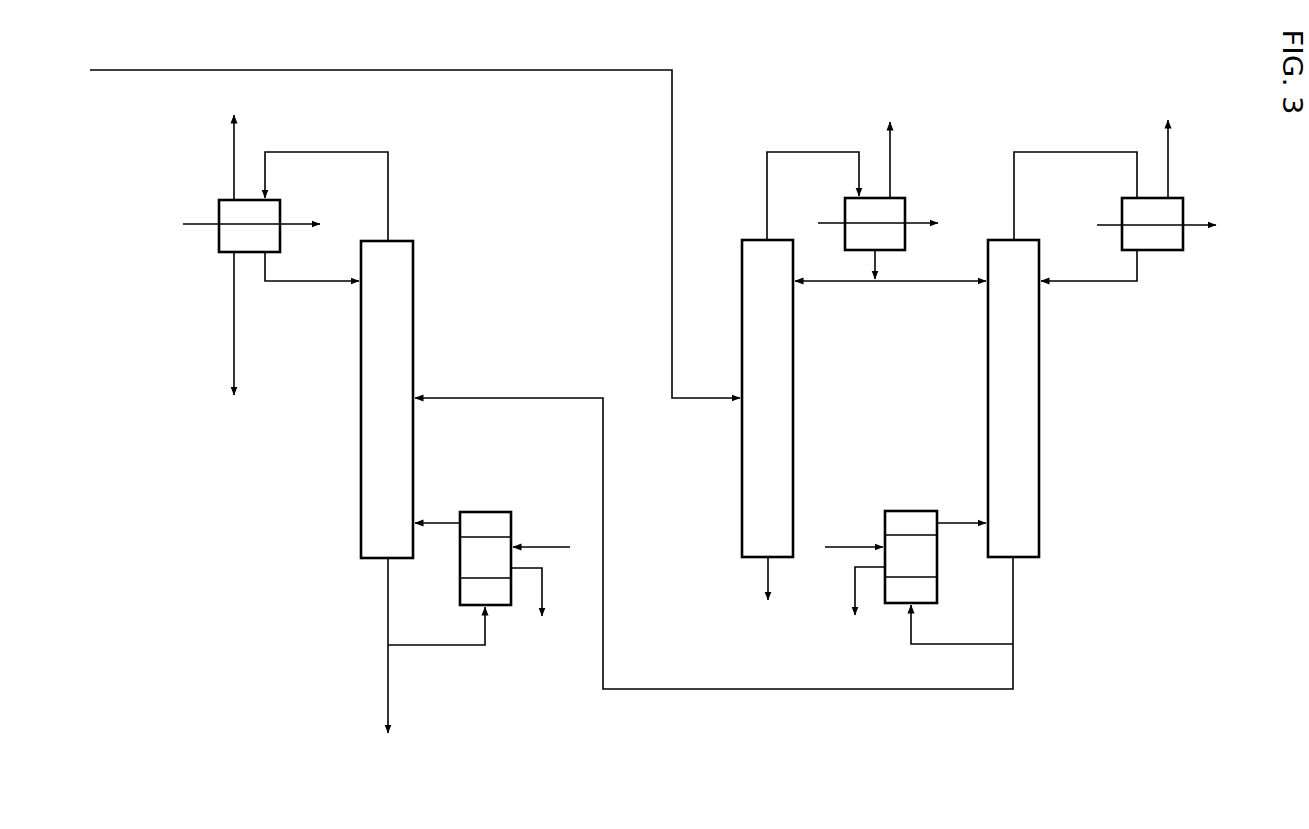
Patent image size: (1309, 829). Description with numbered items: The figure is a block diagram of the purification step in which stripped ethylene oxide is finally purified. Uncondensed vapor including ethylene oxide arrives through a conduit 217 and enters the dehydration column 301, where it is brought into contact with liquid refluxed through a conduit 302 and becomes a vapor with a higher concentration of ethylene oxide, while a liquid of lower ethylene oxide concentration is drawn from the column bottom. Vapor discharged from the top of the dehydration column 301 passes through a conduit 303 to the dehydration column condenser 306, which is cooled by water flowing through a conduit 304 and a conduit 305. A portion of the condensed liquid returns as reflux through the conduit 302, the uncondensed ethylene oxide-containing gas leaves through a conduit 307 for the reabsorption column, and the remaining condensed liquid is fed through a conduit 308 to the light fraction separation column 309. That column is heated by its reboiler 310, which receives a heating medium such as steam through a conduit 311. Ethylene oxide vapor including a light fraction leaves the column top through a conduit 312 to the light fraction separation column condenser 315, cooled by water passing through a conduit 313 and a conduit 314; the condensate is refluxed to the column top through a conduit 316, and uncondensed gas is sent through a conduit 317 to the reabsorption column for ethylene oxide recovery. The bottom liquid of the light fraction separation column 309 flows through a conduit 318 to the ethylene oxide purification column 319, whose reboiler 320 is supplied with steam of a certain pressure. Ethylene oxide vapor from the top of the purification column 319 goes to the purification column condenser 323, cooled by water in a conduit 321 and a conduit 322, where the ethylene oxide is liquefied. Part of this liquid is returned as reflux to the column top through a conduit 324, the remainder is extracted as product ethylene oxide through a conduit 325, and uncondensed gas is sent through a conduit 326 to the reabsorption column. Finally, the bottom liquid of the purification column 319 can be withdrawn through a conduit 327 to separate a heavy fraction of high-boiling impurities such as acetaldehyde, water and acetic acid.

The conduit 217 is at (118, 72).
The dehydration column 301 is at (795, 440).
The conduit 302 is at (829, 285).
The conduit 303 is at (827, 150).
The conduit 304 is at (827, 220).
The conduit 305 is at (924, 220).
The dehydration column condenser 306 is at (907, 240).
The conduit 307 is at (890, 144).
The conduit 308 is at (946, 285).
The light fraction separation column 309 is at (1041, 440).
The reboiler 310 is at (939, 583).
The conduit 311 is at (836, 542).
The conduit 312 is at (1102, 150).
The conduit 313 is at (1102, 220).
The conduit 314 is at (1203, 229).
The light fraction separation column condenser 315 is at (1167, 257).
The conduit 316 is at (1104, 285).
The conduit 317 is at (1170, 141).
The conduit 318 is at (1015, 660).
The ethylene oxide purification column 319 is at (361, 465).
The reboiler 320 is at (460, 583).
The conduit 321 is at (199, 222).
The conduit 322 is at (296, 222).
The purification column condenser 323 is at (219, 240).
The conduit 324 is at (298, 284).
The conduit 325 is at (234, 338).
The conduit 326 is at (234, 134).
The conduit 327 is at (388, 693).